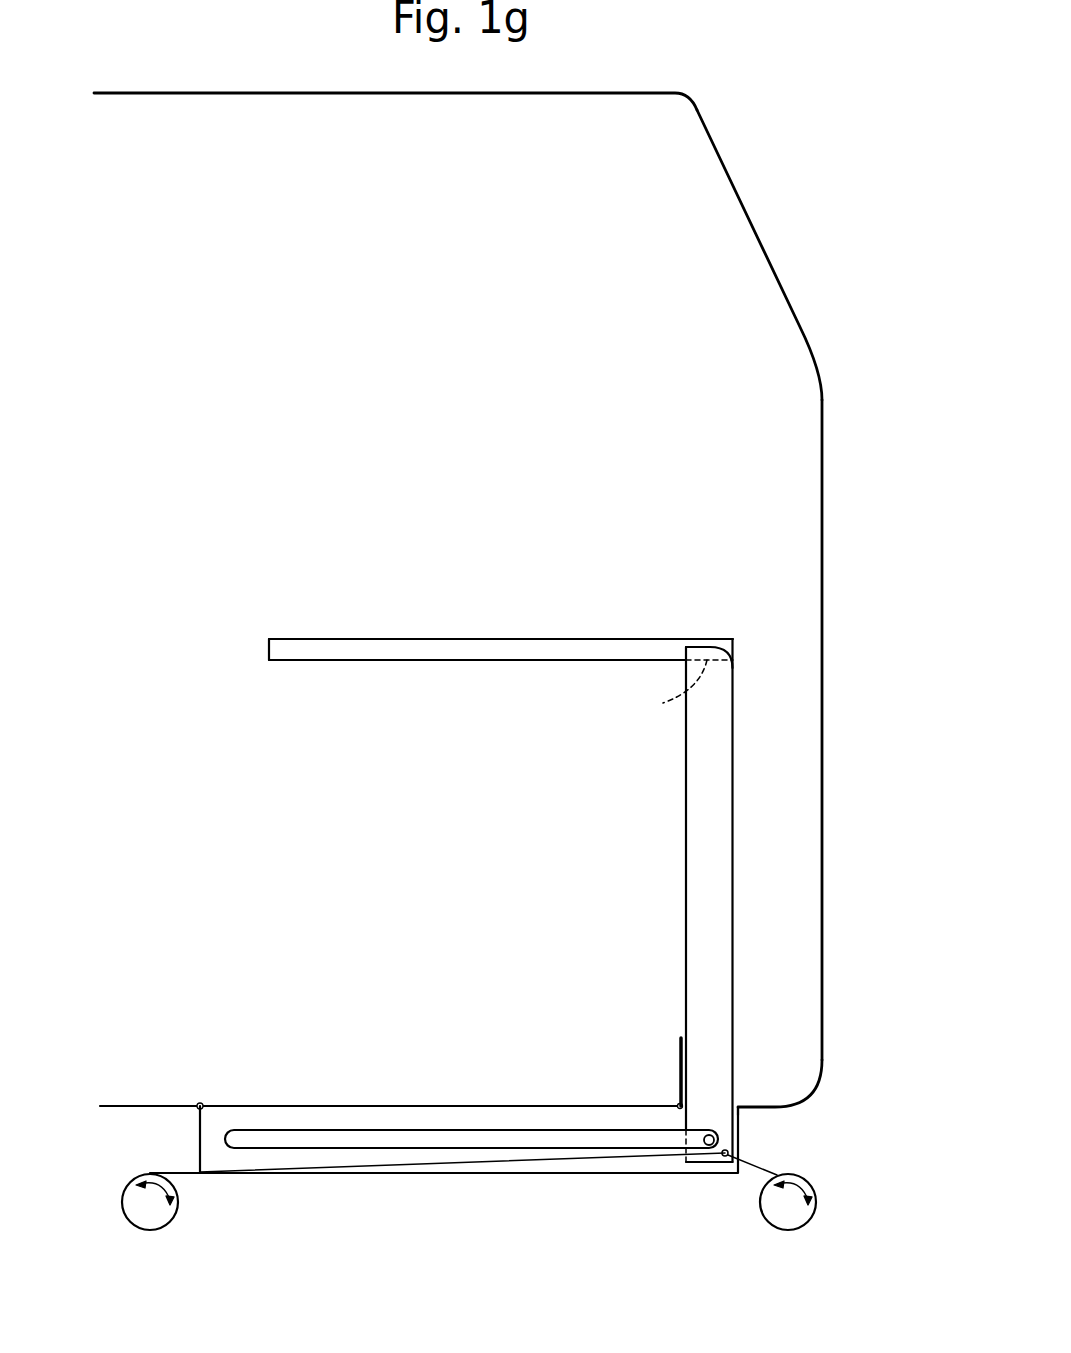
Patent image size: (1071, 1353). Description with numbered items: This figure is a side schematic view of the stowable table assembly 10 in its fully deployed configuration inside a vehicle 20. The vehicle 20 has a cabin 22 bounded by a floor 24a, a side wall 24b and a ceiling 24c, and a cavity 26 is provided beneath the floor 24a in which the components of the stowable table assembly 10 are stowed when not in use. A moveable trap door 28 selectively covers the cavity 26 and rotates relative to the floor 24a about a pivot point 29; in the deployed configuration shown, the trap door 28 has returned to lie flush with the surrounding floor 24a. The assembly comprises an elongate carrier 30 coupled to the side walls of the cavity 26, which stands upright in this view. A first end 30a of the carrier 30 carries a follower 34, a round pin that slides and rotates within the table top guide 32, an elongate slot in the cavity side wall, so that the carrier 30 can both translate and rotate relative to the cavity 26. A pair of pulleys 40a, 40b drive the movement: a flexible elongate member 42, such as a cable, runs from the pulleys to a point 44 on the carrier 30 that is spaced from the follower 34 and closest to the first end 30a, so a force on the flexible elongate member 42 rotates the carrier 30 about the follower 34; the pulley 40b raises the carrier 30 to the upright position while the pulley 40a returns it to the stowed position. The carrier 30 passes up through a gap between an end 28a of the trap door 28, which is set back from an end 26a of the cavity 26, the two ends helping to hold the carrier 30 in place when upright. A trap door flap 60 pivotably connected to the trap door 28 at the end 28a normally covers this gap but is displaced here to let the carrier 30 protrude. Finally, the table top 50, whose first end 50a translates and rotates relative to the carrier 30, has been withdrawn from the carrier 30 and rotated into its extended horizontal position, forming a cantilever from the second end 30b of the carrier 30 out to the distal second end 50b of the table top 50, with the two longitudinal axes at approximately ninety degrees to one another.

The stowable table assembly 10 is at (492, 853).
The vehicle 20 is at (491, 611).
The cabin 22 is at (758, 308).
The floor 24a is at (777, 1108).
The side walls 24b is at (824, 777).
The ceiling 24c is at (250, 93).
The cavity 26 is at (478, 1134).
The end of the cavity 26a is at (739, 1107).
The trap door 28 is at (391, 1047).
The end of the trap door 28a is at (678, 1104).
The pivot point 29 is at (201, 1103).
The carrier 30 is at (704, 902).
The first end of the carrier 30a is at (690, 1163).
The second end of the carrier 30b is at (694, 650).
The table top guide 32 is at (368, 1132).
The follower 34 is at (714, 1141).
The pulley 40a is at (152, 1231).
The pulley 40b is at (786, 1231).
The flexible elongate member 42 is at (488, 1194).
The coupling point 44 is at (724, 1160).
The table top 50 is at (454, 648).
The first end of the table top 50a is at (661, 688).
The second end of the table top 50b is at (268, 651).
The trap door flap 60 is at (679, 1040).